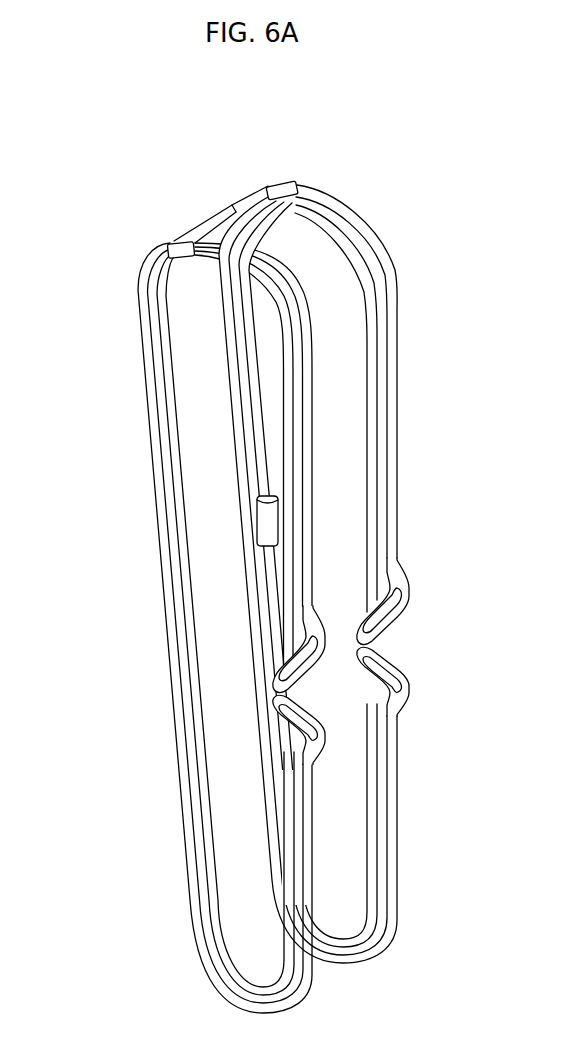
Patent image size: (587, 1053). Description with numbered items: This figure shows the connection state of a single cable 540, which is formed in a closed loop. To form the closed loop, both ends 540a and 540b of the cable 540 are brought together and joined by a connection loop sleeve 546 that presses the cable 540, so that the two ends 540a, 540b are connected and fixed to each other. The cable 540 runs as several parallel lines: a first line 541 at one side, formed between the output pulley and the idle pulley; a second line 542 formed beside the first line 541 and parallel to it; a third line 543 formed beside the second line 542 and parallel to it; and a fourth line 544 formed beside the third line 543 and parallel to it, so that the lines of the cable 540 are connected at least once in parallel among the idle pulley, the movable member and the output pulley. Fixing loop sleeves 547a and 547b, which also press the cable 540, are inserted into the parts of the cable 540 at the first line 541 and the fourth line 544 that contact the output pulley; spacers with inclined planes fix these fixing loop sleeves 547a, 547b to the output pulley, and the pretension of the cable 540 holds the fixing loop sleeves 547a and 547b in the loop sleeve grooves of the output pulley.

The cable 540 is at (134, 668).
The end of the cable 540a is at (258, 468).
The end of the cable 540b is at (271, 567).
The first line 541 is at (293, 415).
The second line 542 is at (312, 393).
The third line 543 is at (370, 458).
The fourth line 544 is at (397, 494).
The connection loop sleeve 546 is at (264, 523).
The fixing loop sleeve 547a is at (174, 248).
The fixing loop sleeve 547b is at (284, 183).